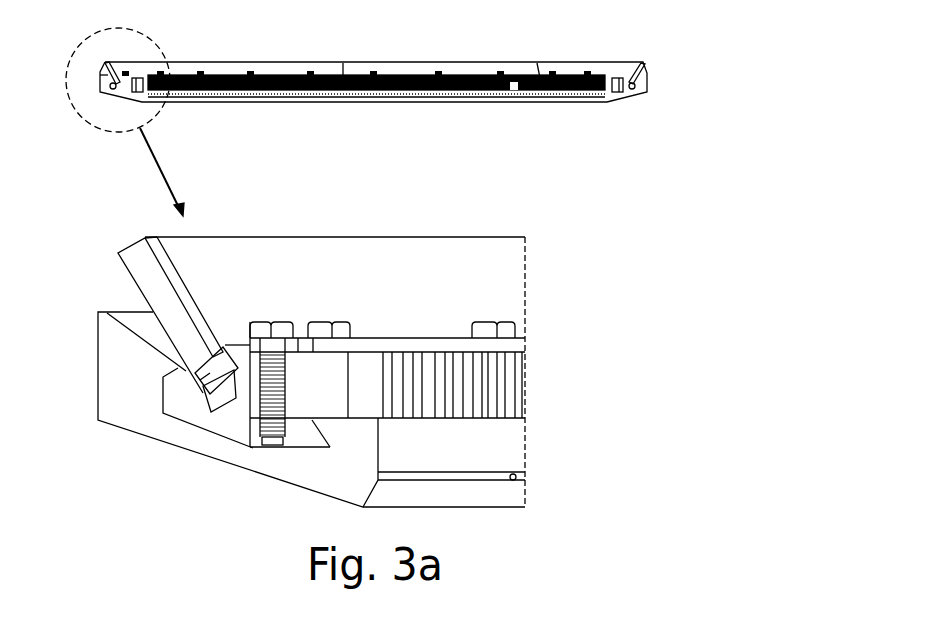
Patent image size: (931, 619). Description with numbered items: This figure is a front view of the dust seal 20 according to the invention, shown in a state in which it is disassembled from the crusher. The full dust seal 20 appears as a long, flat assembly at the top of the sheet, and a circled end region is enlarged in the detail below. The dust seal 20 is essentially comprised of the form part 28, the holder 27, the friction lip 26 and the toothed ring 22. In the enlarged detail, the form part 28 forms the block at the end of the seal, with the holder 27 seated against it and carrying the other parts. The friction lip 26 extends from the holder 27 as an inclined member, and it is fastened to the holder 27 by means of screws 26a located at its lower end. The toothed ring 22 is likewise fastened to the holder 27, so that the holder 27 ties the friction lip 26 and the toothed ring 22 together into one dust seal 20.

The dust seal 20 is at (625, 53).
The toothed ring 22 is at (300, 407).
The friction lip 26 is at (138, 262).
The screws 26a is at (197, 388).
The holder 27 is at (237, 422).
The form part 28 is at (147, 408).